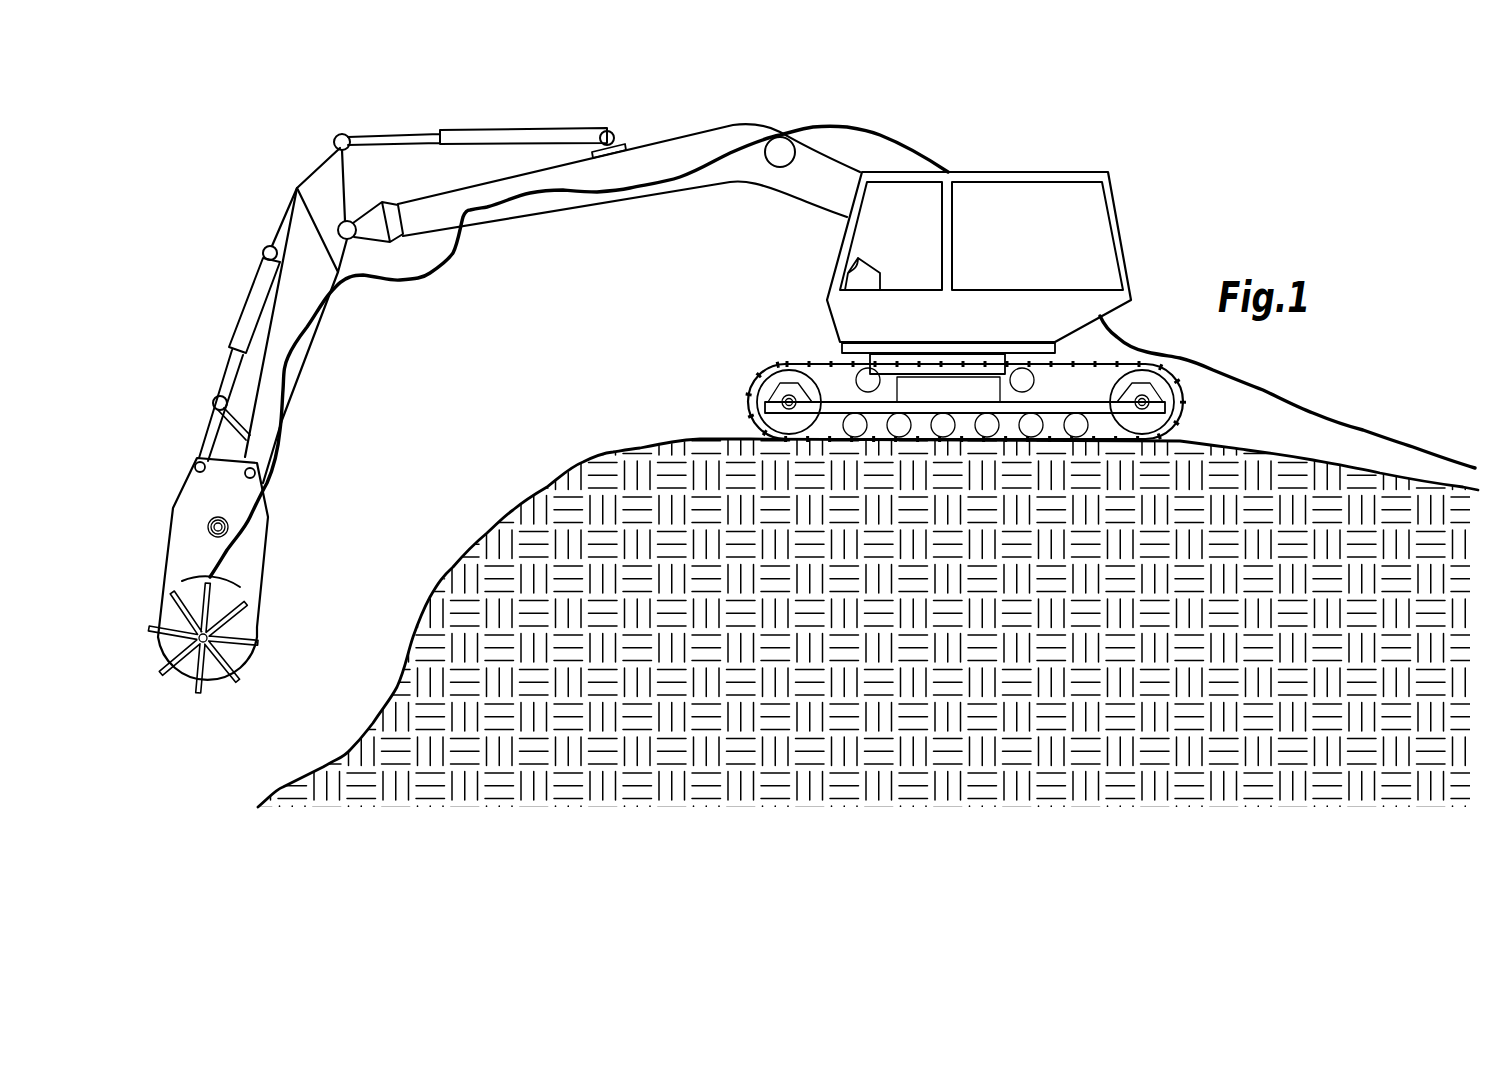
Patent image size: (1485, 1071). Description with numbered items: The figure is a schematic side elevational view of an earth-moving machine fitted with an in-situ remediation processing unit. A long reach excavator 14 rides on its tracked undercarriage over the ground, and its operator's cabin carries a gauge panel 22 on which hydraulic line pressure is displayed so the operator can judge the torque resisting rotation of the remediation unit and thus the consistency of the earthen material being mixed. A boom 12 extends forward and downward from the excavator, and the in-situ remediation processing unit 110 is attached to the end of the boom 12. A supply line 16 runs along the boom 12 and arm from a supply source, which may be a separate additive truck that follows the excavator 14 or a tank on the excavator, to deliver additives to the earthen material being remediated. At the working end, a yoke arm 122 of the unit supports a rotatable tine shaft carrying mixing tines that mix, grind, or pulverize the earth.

The boom 12 is at (222, 307).
The long reach excavator 14 is at (945, 151).
The supply line 16 is at (440, 272).
The gauge panel 22 is at (857, 263).
The in-situ remediation processing unit 110 is at (273, 605).
The yoke arm 122 is at (212, 598).